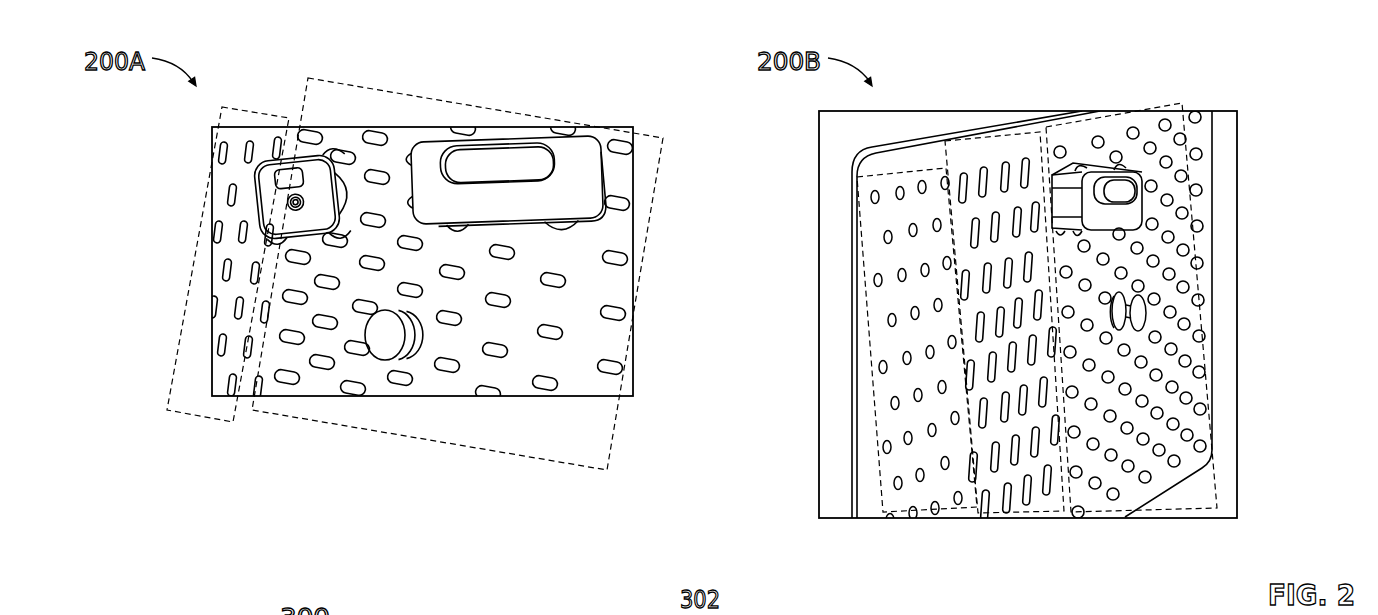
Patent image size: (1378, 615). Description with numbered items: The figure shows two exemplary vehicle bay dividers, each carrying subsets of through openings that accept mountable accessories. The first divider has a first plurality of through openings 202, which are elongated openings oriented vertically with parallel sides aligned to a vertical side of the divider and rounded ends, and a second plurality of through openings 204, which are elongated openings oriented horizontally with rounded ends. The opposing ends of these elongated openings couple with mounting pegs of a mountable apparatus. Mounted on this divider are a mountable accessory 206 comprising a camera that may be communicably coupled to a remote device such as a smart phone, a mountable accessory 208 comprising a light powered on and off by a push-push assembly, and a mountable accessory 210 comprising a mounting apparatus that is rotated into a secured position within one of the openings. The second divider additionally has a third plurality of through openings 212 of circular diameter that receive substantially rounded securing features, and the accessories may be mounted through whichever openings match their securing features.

The first plurality of through openings 202 is at (196, 418).
The second plurality of through openings 204 is at (548, 466).
The mountable accessory 206 is at (268, 190).
The mountable accessory 208 is at (517, 157).
The mountable accessory 210 is at (397, 352).
The third plurality of through openings 212 is at (900, 518).